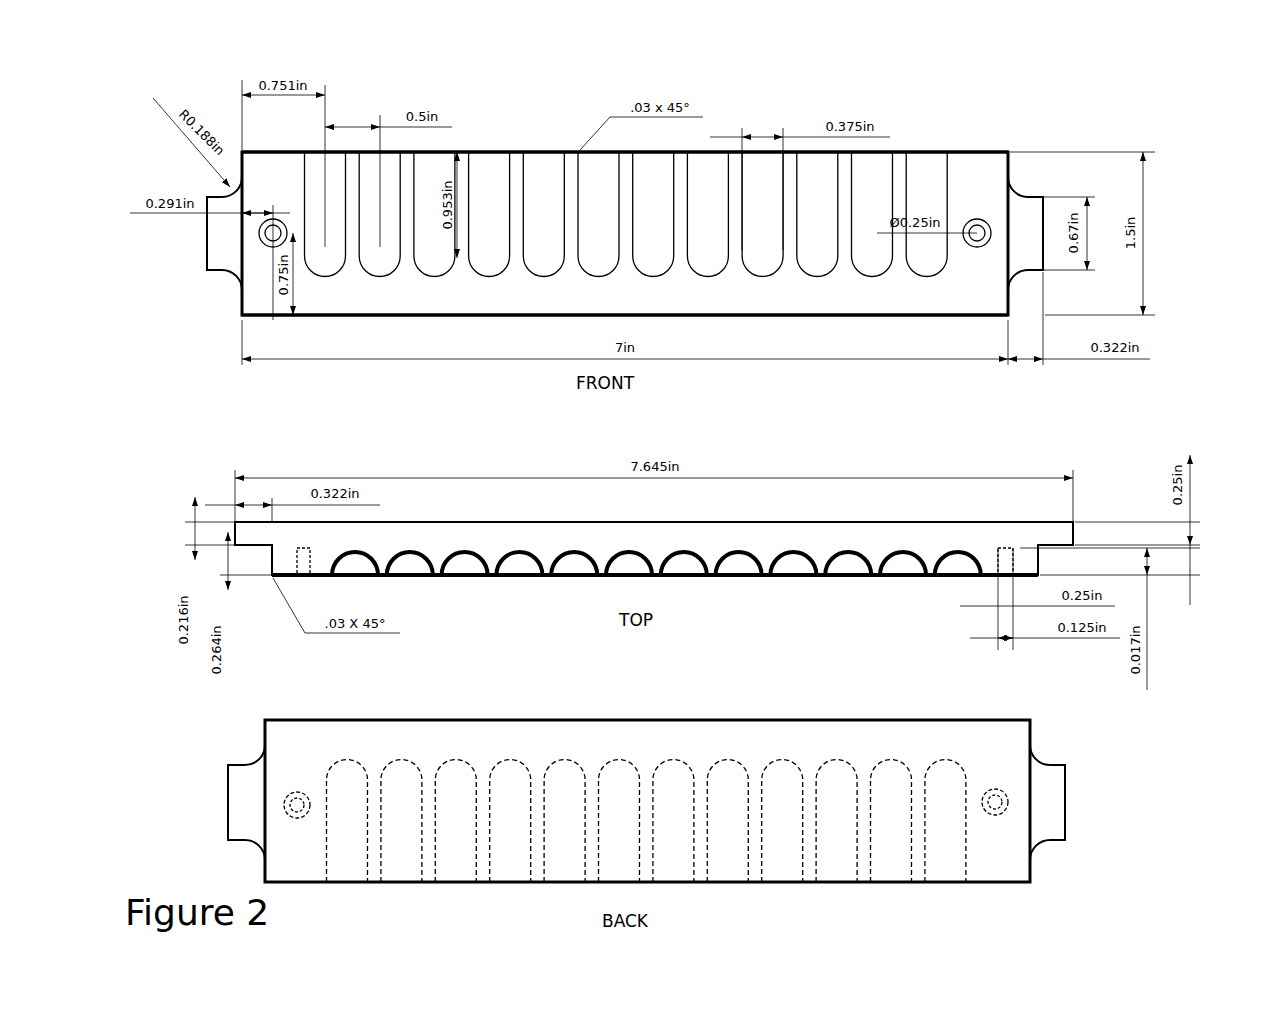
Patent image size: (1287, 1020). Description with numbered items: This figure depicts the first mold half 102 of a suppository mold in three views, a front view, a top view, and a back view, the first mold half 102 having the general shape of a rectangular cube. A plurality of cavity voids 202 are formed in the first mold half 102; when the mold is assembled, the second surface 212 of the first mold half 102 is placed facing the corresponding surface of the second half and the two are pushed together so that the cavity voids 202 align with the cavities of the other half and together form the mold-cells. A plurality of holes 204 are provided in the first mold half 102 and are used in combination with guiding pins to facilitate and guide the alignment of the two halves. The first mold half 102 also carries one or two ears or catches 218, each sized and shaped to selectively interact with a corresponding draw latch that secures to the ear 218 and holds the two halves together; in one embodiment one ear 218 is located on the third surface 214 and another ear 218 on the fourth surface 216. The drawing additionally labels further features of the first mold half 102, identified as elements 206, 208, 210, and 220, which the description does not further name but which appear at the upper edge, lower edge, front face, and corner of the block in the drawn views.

The first mold half 102 is at (654, 517).
The cavity voids 202 is at (643, 460).
The holes 204 is at (636, 423).
The top edge 206 is at (579, 85).
The bottom edge 208 is at (565, 348).
The front surface 210 is at (655, 463).
The second surface 212 is at (655, 637).
The third surface 214 is at (158, 372).
The fourth surface 216 is at (1152, 371).
The ears or catches 218 is at (647, 480).
The chamfer 220 is at (285, 614).